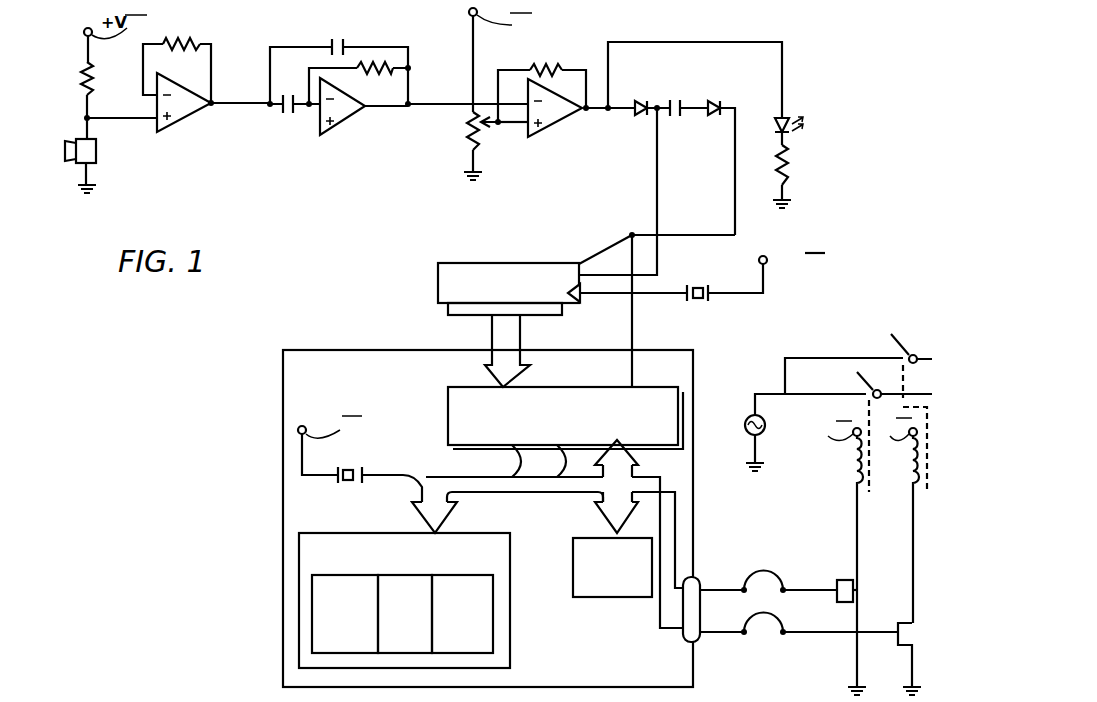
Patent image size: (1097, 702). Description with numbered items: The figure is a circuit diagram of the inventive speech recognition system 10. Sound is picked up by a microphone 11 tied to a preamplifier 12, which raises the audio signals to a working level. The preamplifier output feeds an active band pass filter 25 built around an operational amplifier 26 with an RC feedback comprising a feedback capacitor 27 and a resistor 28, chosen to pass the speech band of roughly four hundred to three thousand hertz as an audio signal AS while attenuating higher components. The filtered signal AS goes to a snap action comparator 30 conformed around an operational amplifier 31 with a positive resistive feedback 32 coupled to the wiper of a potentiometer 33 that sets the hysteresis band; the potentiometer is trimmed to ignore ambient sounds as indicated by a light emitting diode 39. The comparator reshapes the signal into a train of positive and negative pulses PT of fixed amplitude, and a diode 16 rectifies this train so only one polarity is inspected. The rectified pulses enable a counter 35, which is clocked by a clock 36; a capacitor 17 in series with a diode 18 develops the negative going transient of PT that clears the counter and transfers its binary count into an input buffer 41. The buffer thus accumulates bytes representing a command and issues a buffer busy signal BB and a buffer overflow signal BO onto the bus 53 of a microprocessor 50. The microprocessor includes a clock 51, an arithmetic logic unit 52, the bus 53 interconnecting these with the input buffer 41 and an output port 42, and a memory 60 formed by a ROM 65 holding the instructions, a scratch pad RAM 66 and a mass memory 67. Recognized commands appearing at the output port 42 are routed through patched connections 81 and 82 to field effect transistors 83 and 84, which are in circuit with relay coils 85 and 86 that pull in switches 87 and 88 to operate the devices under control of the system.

The recognition system 10 is at (288, 217).
The microphone 11 is at (96, 152).
The preamplifier 12 is at (178, 122).
The diode 16 is at (640, 118).
The capacitor 17 is at (676, 100).
The diode 18 is at (714, 100).
The active band pass filter 25 is at (340, 125).
The operational amplifier 26 is at (318, 120).
The feedback capacitor 27 is at (343, 40).
The feedback resistor 28 is at (366, 76).
The snap action comparator 30 is at (548, 125).
The operational amplifier 31 is at (545, 85).
The positive resistive feedback 32 is at (540, 64).
The potentiometer 33 is at (480, 140).
The counter 35 is at (492, 264).
The clock 36 is at (697, 300).
The light emitting diode 39 is at (786, 118).
The input buffer 41 is at (558, 387).
The output port 42 is at (698, 640).
The microprocessor 50 is at (300, 350).
The clock 51 is at (366, 450).
The arithmetic logic unit 52 is at (590, 597).
The bus 53 is at (462, 477).
The memory 60 is at (520, 549).
The ROM 65 is at (456, 575).
The scratch pad RAM 66 is at (400, 575).
The mass memory 67 is at (312, 600).
The patched connection 81 is at (757, 572).
The patched connection 82 is at (755, 614).
The field effect transistor 83 is at (836, 580).
The field effect transistor 84 is at (898, 645).
The relay coil 85 is at (856, 483).
The relay coil 86 is at (912, 483).
The switch 87 is at (856, 378).
The switch 88 is at (894, 318).